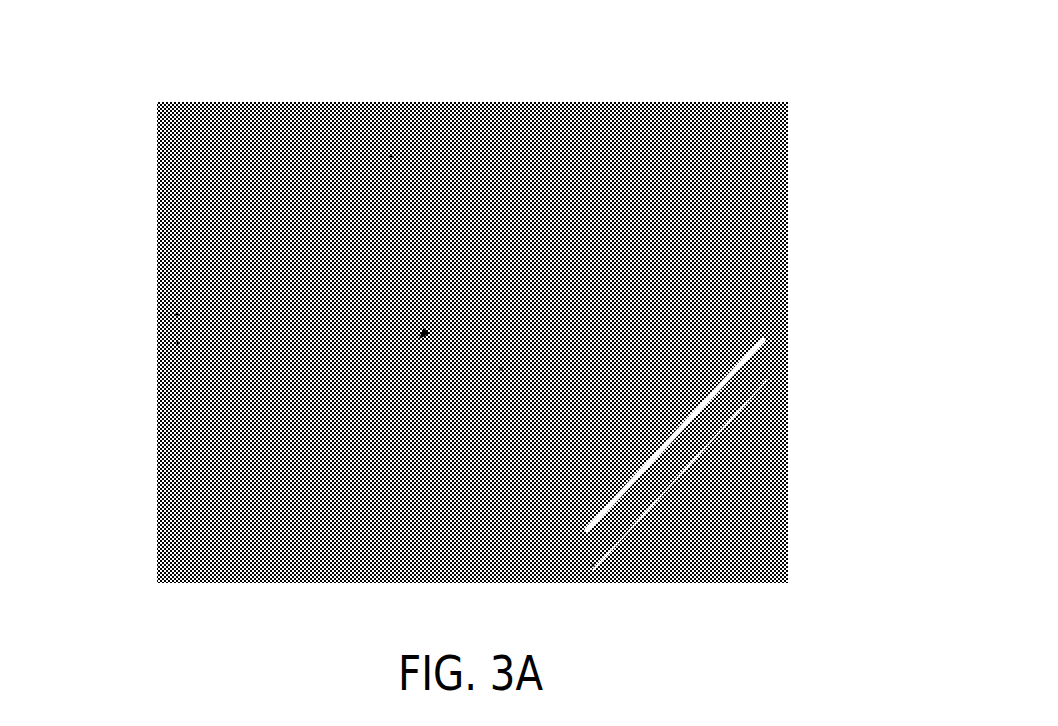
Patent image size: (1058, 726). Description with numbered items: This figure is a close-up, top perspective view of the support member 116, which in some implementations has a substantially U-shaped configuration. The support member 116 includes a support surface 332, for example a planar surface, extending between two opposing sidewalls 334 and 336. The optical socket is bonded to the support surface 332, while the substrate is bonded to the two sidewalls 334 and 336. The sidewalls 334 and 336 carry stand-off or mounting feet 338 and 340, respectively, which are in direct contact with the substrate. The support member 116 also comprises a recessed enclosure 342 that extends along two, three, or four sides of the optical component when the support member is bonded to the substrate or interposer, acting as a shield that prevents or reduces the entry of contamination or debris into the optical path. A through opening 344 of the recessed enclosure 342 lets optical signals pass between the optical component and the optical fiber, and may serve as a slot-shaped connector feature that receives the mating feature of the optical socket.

The support member 116 is at (618, 325).
The support surface 332 is at (392, 155).
The sidewall 334 is at (177, 313).
The sidewall 336 is at (618, 512).
The mounting foot 338 is at (177, 342).
The mounting foot 340 is at (595, 563).
The recessed enclosure 342 is at (502, 368).
The through opening 344 is at (420, 338).